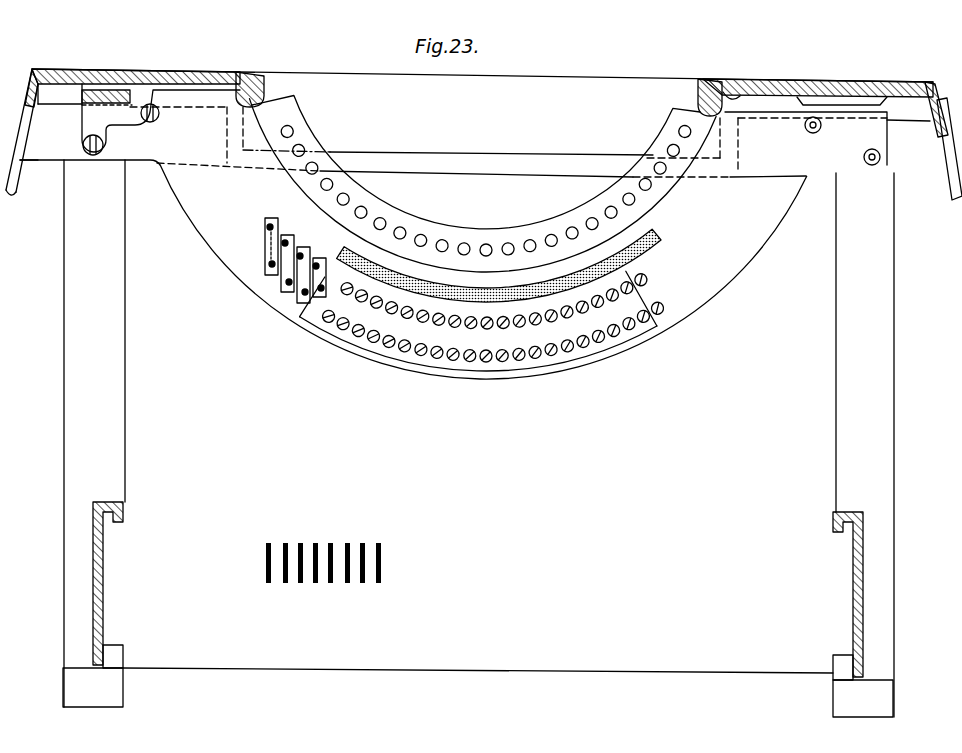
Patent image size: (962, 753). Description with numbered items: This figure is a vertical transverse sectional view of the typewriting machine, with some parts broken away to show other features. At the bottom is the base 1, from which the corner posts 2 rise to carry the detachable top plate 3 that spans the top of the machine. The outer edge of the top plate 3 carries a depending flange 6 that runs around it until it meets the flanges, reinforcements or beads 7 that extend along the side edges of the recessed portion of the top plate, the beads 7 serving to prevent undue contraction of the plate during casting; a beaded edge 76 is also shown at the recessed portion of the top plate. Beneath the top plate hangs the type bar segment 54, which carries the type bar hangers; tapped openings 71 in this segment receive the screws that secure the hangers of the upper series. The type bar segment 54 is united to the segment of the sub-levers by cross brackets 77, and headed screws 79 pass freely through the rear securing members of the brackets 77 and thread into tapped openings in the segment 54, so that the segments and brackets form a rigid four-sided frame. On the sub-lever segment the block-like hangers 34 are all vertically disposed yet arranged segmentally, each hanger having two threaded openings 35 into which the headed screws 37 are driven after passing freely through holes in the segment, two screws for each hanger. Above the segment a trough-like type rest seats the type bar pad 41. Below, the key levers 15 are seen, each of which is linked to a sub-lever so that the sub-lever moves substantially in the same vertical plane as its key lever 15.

The base 1 is at (93, 595).
The corner posts 2 is at (475, 412).
The top plate 3 is at (114, 70).
The depending flange 6 is at (14, 192).
The flanges, reinforcements or beads 7 is at (483, 238).
The key levers 15 is at (329, 545).
The hangers 34 is at (315, 254).
The threaded openings 35 is at (266, 232).
The headed screws 37 is at (497, 363).
The type bar pad 41 is at (506, 265).
The type bar segment 54 is at (276, 304).
The tapped openings 71 is at (597, 224).
The rail 76 is at (535, 170).
The cross brackets 77 is at (82, 97).
The headed screws 79 is at (159, 112).